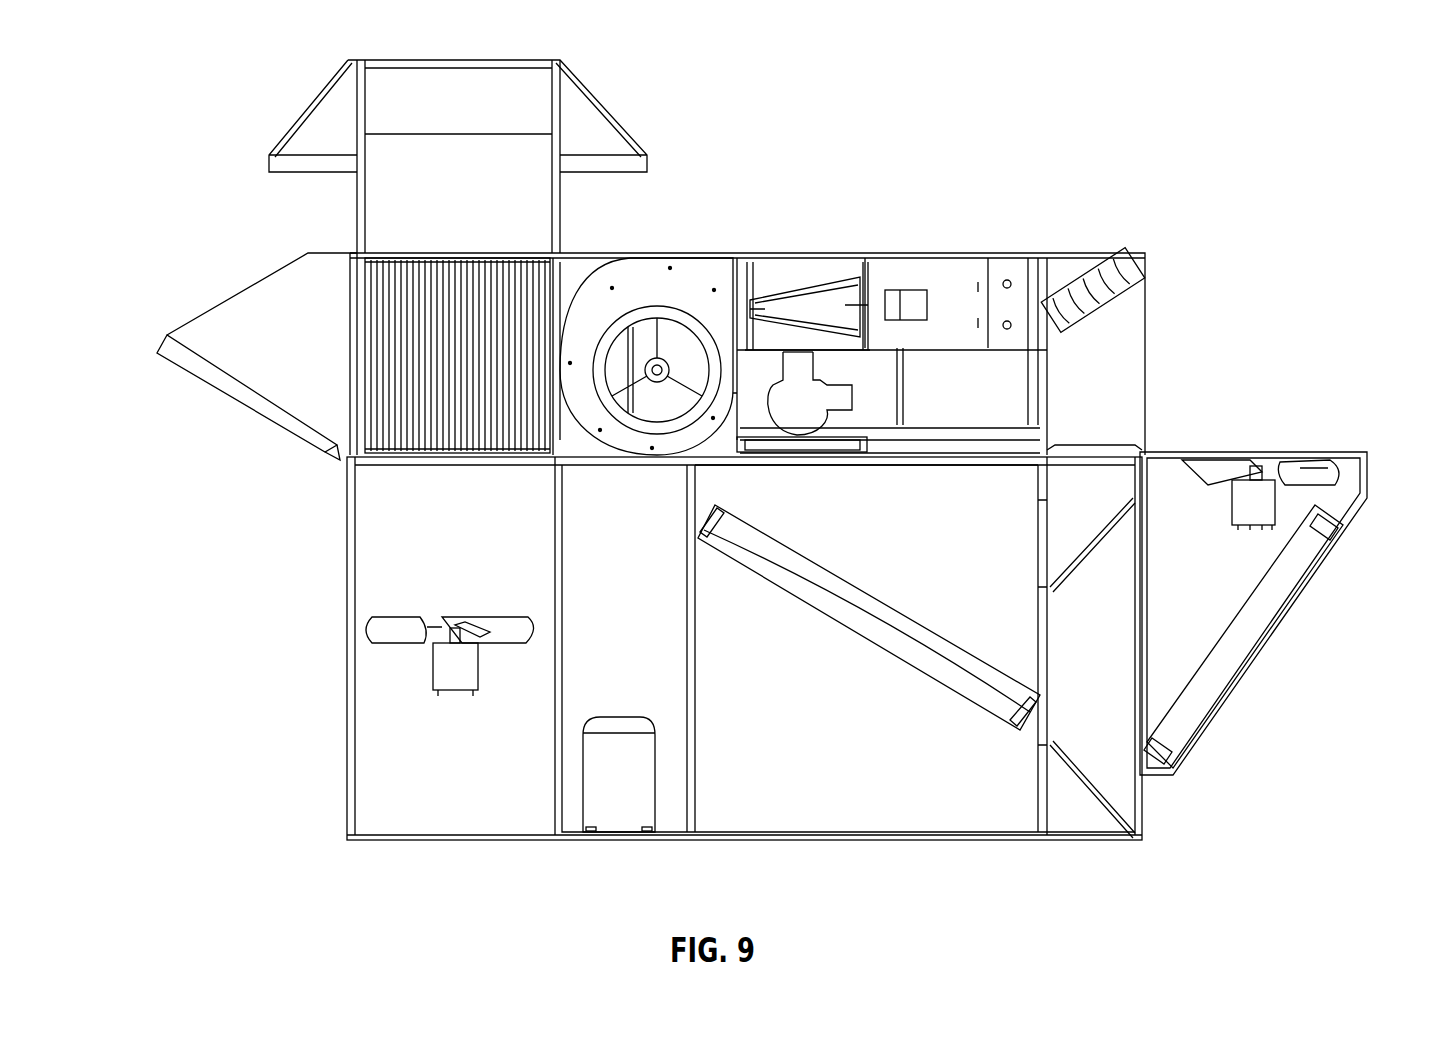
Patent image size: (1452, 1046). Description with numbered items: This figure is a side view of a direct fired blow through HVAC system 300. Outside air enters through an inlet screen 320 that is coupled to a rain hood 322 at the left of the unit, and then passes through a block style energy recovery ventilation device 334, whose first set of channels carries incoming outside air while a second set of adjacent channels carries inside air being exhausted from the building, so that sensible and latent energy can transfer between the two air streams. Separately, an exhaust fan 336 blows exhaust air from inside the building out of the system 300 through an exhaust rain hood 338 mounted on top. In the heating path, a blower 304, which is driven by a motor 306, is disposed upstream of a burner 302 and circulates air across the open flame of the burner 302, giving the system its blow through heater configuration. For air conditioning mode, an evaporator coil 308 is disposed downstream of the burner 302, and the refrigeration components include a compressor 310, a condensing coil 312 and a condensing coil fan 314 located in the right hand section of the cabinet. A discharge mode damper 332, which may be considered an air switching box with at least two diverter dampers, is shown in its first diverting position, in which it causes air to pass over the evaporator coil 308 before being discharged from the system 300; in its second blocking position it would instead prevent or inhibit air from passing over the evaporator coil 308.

The direct fired blow through HVAC system 300 is at (1255, 135).
The burner 302 is at (808, 305).
The blower 304 is at (656, 372).
The motor 306 is at (800, 398).
The evaporator coil 308 is at (910, 645).
The compressor 310 is at (620, 782).
The condensing coil 312 is at (1218, 673).
The condensing coil fan 314 is at (1310, 473).
The inlet screen 320 is at (268, 407).
The rain hood 322 is at (275, 303).
The discharge mode damper 332 is at (1095, 790).
The energy recovery ventilation device 334 is at (457, 415).
The exhaust fan 336 is at (457, 660).
The exhaust rain hood 338 is at (505, 113).